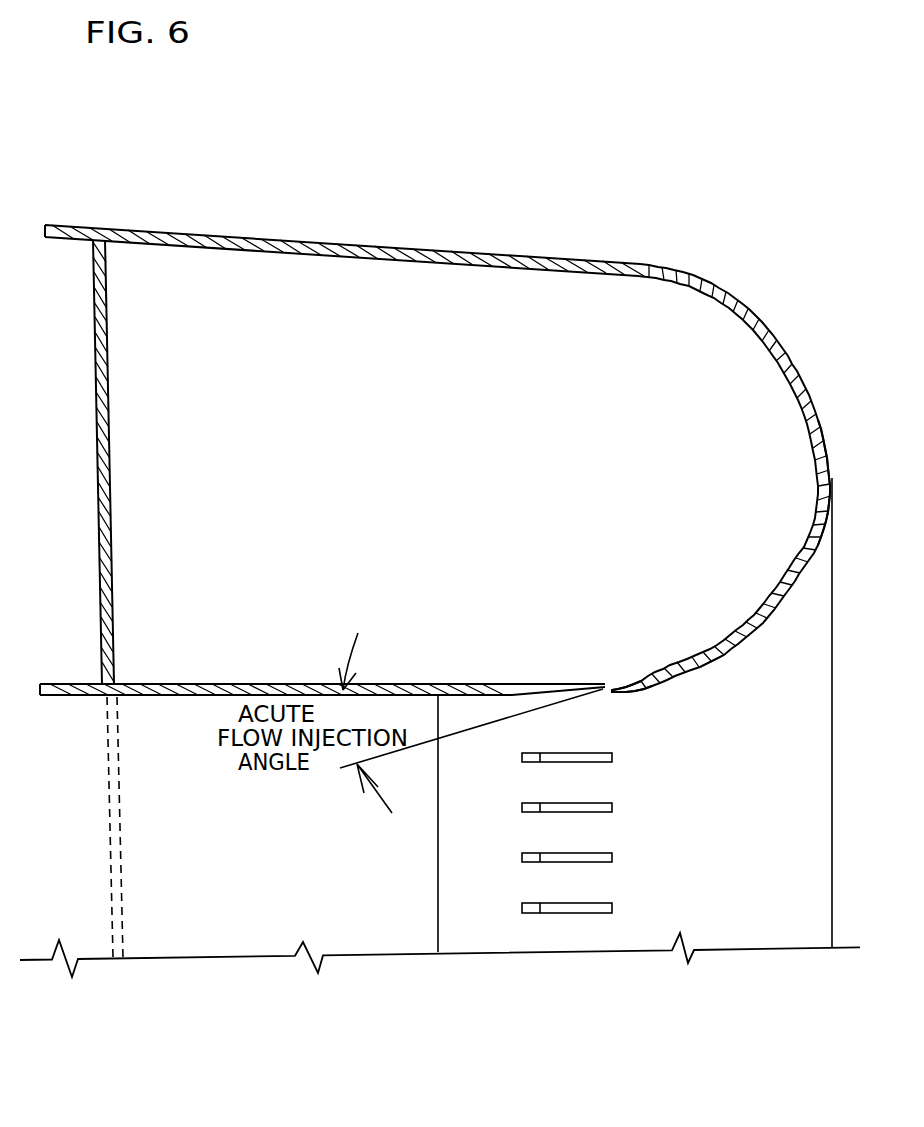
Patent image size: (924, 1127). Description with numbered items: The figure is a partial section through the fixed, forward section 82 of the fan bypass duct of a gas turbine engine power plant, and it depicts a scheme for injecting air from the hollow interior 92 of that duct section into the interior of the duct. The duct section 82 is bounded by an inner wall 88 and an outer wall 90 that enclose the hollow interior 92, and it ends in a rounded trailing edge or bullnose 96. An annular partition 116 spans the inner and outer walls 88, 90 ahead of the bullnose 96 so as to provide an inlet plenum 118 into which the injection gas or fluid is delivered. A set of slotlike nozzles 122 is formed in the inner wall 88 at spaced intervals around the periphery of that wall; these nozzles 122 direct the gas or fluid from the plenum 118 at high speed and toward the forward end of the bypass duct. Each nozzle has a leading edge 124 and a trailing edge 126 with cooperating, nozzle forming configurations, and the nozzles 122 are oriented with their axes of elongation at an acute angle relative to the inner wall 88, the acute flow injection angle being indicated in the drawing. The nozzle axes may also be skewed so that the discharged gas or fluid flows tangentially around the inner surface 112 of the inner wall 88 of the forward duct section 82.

The fixed forward section of bypass duct 82 is at (560, 226).
The inner wall 88 is at (228, 684).
The outer wall 90 is at (232, 255).
The hollow interior 92 is at (715, 333).
The trailing edge or bullnose 96 is at (830, 457).
The inner surface 112 is at (187, 698).
The annular partition 116 is at (93, 430).
The inlet plenum 118 is at (212, 432).
The slotlike nozzles 122 is at (613, 757).
The leading edge of nozzle 124 is at (516, 694).
The trailing edge of nozzle 126 is at (612, 697).